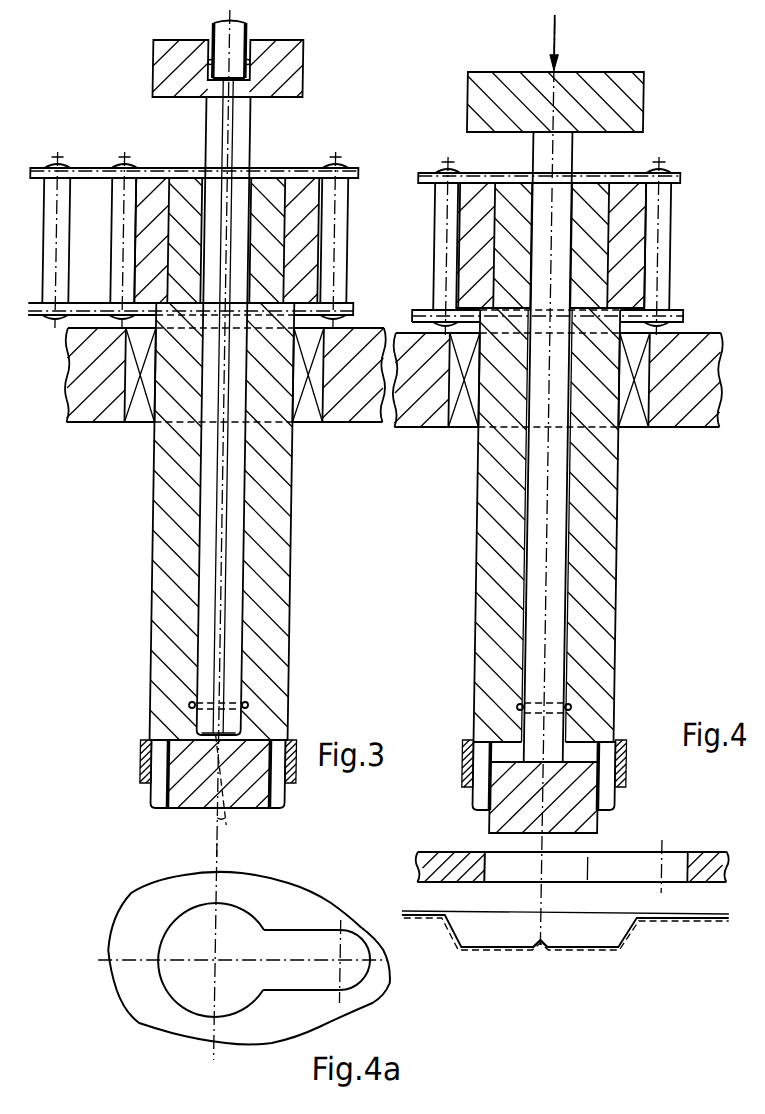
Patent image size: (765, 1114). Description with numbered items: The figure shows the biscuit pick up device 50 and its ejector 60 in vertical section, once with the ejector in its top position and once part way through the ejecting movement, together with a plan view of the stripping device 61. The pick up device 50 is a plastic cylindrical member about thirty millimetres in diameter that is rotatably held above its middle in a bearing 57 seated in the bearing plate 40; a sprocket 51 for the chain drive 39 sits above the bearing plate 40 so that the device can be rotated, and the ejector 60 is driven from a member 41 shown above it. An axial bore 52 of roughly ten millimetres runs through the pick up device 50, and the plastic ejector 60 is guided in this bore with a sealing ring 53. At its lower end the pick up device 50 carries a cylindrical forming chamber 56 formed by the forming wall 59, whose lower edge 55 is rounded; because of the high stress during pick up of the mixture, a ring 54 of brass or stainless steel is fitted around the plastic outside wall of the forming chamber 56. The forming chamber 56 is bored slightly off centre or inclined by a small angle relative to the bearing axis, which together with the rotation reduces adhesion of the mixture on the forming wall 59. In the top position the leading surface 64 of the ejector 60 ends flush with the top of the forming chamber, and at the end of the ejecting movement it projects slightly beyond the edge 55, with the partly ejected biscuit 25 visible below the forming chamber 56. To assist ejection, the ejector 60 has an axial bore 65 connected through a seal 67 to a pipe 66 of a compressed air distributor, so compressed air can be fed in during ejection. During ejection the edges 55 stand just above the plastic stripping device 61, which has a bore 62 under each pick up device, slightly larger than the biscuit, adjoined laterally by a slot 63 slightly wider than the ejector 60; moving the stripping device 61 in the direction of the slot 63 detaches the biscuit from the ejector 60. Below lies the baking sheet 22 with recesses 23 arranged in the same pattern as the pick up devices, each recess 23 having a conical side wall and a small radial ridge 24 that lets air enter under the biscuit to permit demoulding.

In FIG. 4, the baking sheet 22 is at (564, 974).
In FIG. 4, the recess 23 is at (496, 994).
In FIG. 4, the ridge 24 is at (542, 995).
In FIG. 4, the bottom face of insert 25 is at (560, 829).
In FIG. 3, the chain drive 39 is at (195, 218).
In FIG. 4, the chain drive 39 is at (541, 221).
In FIG. 3, the bearing plate 40 is at (224, 408).
In FIG. 4, the bearing plate 40 is at (557, 415).
In FIG. 3, the press ram 41 is at (203, 68).
In FIG. 4, the press ram 41 is at (586, 102).
In FIG. 3, the pick up device 50 is at (256, 521).
In FIG. 4, the pick up device 50 is at (586, 525).
In FIG. 3, the sprocket 51 is at (227, 212).
In FIG. 4, the sprocket 51 is at (597, 245).
In FIG. 3, the bore 52 is at (256, 521).
In FIG. 4, the bore 52 is at (586, 525).
In FIG. 3, the sealing ring 53 is at (167, 704).
In FIG. 4, the sealing ring 53 is at (489, 707).
In FIG. 3, the ring 54 is at (182, 761).
In FIG. 4, the ring 54 is at (583, 763).
In FIG. 3, the edge 55 is at (252, 778).
In FIG. 4, the edge 55 is at (507, 779).
In FIG. 3, the forming chamber 56 is at (219, 791).
In FIG. 4, the forming chamber 56 is at (578, 770).
In FIG. 3, the bearing 57 is at (230, 414).
In FIG. 4, the bearing 57 is at (541, 416).
In FIG. 3, the forming wall 59 is at (238, 723).
In FIG. 3, the ejector 60 is at (249, 416).
In FIG. 4, the ejector 60 is at (576, 447).
In FIG. 4, the stripping device 61 is at (572, 837).
In FIG. 4A, the stripping device 61 is at (227, 958).
In FIG. 4, the bore 62 is at (463, 847).
In FIG. 4A, the bore 62 is at (169, 933).
In FIG. 4, the slot 63 is at (626, 843).
In FIG. 4A, the slot 63 is at (317, 912).
In FIG. 3, the leading surface 64 is at (262, 705).
In FIG. 3, the axial bore 65 is at (249, 406).
In FIG. 3, the pipe 66 is at (209, 47).
In FIG. 3, the seal 67 is at (246, 40).